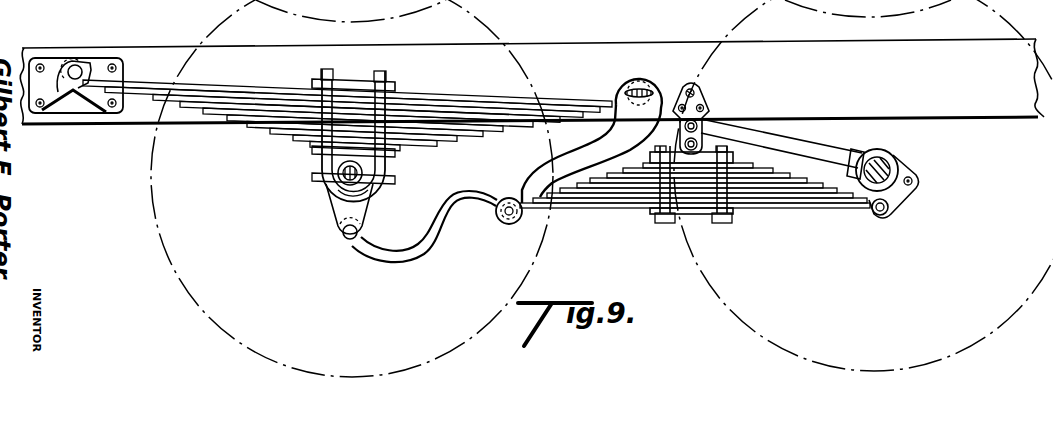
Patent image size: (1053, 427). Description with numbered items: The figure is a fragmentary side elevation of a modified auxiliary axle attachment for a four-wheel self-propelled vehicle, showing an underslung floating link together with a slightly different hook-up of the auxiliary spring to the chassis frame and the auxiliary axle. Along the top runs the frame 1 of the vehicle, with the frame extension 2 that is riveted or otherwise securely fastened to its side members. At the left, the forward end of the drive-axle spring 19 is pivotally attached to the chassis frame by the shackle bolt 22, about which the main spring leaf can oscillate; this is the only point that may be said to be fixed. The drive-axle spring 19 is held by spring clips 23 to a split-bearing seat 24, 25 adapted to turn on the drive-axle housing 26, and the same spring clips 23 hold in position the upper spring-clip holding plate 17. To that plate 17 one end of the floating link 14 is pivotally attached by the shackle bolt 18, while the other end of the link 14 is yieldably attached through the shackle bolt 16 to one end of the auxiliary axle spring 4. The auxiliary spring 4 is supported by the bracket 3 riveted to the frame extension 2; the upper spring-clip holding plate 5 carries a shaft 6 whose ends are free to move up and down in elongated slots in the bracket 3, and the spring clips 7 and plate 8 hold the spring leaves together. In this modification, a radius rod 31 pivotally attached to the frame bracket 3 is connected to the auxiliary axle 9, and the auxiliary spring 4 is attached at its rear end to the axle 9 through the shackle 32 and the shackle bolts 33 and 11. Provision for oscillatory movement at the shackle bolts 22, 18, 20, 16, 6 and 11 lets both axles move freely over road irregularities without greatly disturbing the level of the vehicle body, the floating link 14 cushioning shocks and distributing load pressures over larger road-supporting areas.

The frame 1 is at (167, 51).
The frame extension 2 is at (697, 88).
The bracket 3 is at (707, 99).
The auxiliary axle spring 4 is at (780, 194).
The upper spring-clip holding plate 5 is at (658, 152).
The shaft 6 is at (750, 135).
The spring clip 7 is at (657, 188).
The plate 8 is at (694, 210).
The auxiliary axle 9 is at (895, 162).
The shackle bolt 11 is at (880, 223).
The floating link 14 is at (441, 196).
The shackle bolt 16 is at (498, 233).
The upper spring-clip holding plate 17 is at (370, 85).
The shackle bolt 18 is at (343, 259).
The drive-axle spring 19 is at (263, 118).
The shackle bolt 20 is at (646, 88).
The shackle bolt 22 is at (77, 65).
The spring clip 23 is at (314, 163).
The split-bearing seat 24 is at (325, 179).
The split-bearing seat 25 is at (338, 189).
The drive-axle housing 26 is at (351, 199).
The radius rod 31 is at (803, 138).
The shackle 32 is at (903, 198).
The shackle bolt 33 is at (912, 181).